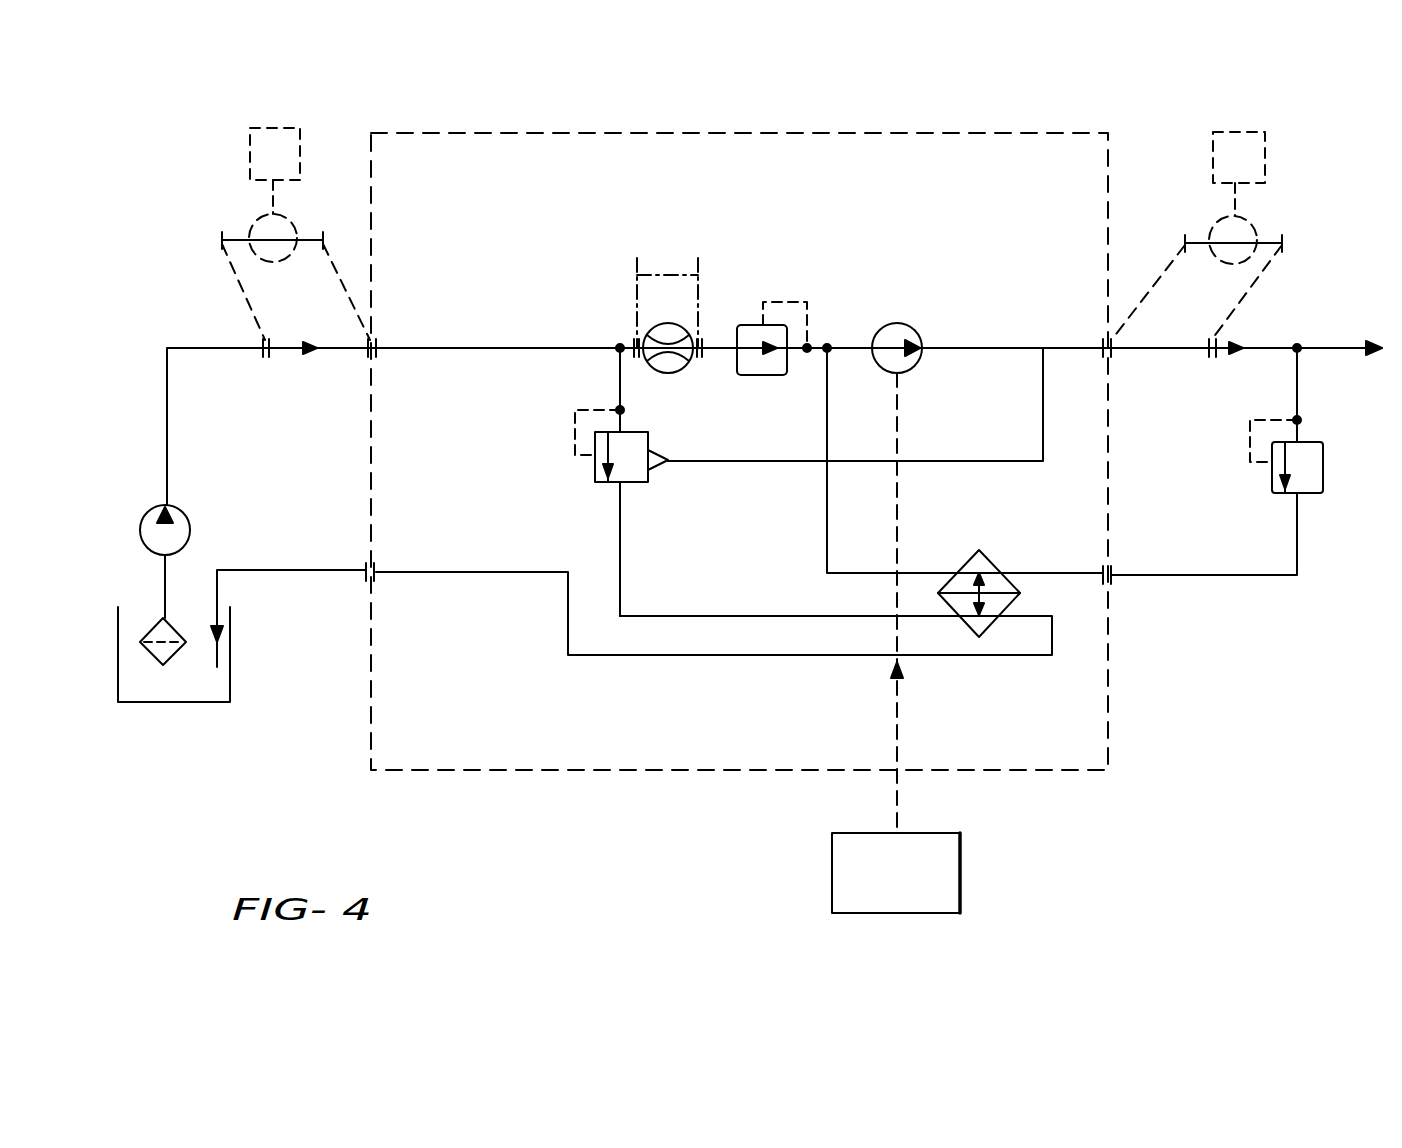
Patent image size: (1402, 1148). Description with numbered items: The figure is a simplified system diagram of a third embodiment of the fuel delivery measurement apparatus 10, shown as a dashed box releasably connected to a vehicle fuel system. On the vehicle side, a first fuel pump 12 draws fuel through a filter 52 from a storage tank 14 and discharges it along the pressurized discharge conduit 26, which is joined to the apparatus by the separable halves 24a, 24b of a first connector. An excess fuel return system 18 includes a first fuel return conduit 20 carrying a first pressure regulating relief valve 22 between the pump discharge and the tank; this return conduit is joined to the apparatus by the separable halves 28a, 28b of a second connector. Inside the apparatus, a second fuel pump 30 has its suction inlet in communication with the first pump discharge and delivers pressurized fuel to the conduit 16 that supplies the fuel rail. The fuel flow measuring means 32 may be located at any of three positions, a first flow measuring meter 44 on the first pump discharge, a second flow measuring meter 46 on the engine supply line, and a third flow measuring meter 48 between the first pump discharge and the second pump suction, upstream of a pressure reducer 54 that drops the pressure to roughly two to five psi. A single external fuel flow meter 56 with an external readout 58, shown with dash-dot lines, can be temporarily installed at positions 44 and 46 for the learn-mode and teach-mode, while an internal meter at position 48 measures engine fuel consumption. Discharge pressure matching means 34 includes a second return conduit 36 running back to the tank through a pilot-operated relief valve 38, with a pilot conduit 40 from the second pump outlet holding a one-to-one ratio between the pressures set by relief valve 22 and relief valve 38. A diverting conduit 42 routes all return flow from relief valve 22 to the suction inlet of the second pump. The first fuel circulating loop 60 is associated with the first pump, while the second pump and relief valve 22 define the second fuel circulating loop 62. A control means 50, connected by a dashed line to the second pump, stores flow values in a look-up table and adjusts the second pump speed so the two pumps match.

The fuel delivery measurement apparatus 10 is at (696, 126).
The first fuel pump 12 is at (178, 508).
The storage tank 14 is at (183, 703).
The conduit 16 is at (1308, 360).
The excess fuel return system 18 is at (1301, 596).
The first fuel return conduit 20 is at (272, 570).
The first pressure regulating relief valve 22 is at (1315, 495).
The separable half of first connector 24a is at (265, 350).
The separable half of first connector 24b is at (1215, 343).
The pressurized discharge conduit 26 is at (190, 347).
The separable half of second connector 28a is at (365, 575).
The separable half of second connector 28b is at (1113, 575).
The second fuel pump 30 is at (895, 323).
The fuel flow measuring means 32 is at (656, 371).
The discharge pressure matching means 34 is at (588, 477).
The second return conduit 36 is at (466, 572).
The pilot-operated relief valve 38 is at (635, 482).
The pilot conduit 40 is at (758, 460).
The diverting conduit 42 is at (827, 522).
The first flow measuring meter 44 is at (288, 332).
The second flow measuring meter 46 is at (1185, 322).
The third flow measuring meter 48 is at (648, 325).
The control means 50 is at (960, 858).
The filter 52 is at (160, 620).
The pressure reducer 54 is at (755, 325).
The external fuel flow meter 56 is at (258, 222).
The external readout 58 is at (250, 132).
The first fuel circulating loop 60 is at (340, 528).
The second fuel circulating loop 62 is at (1248, 548).